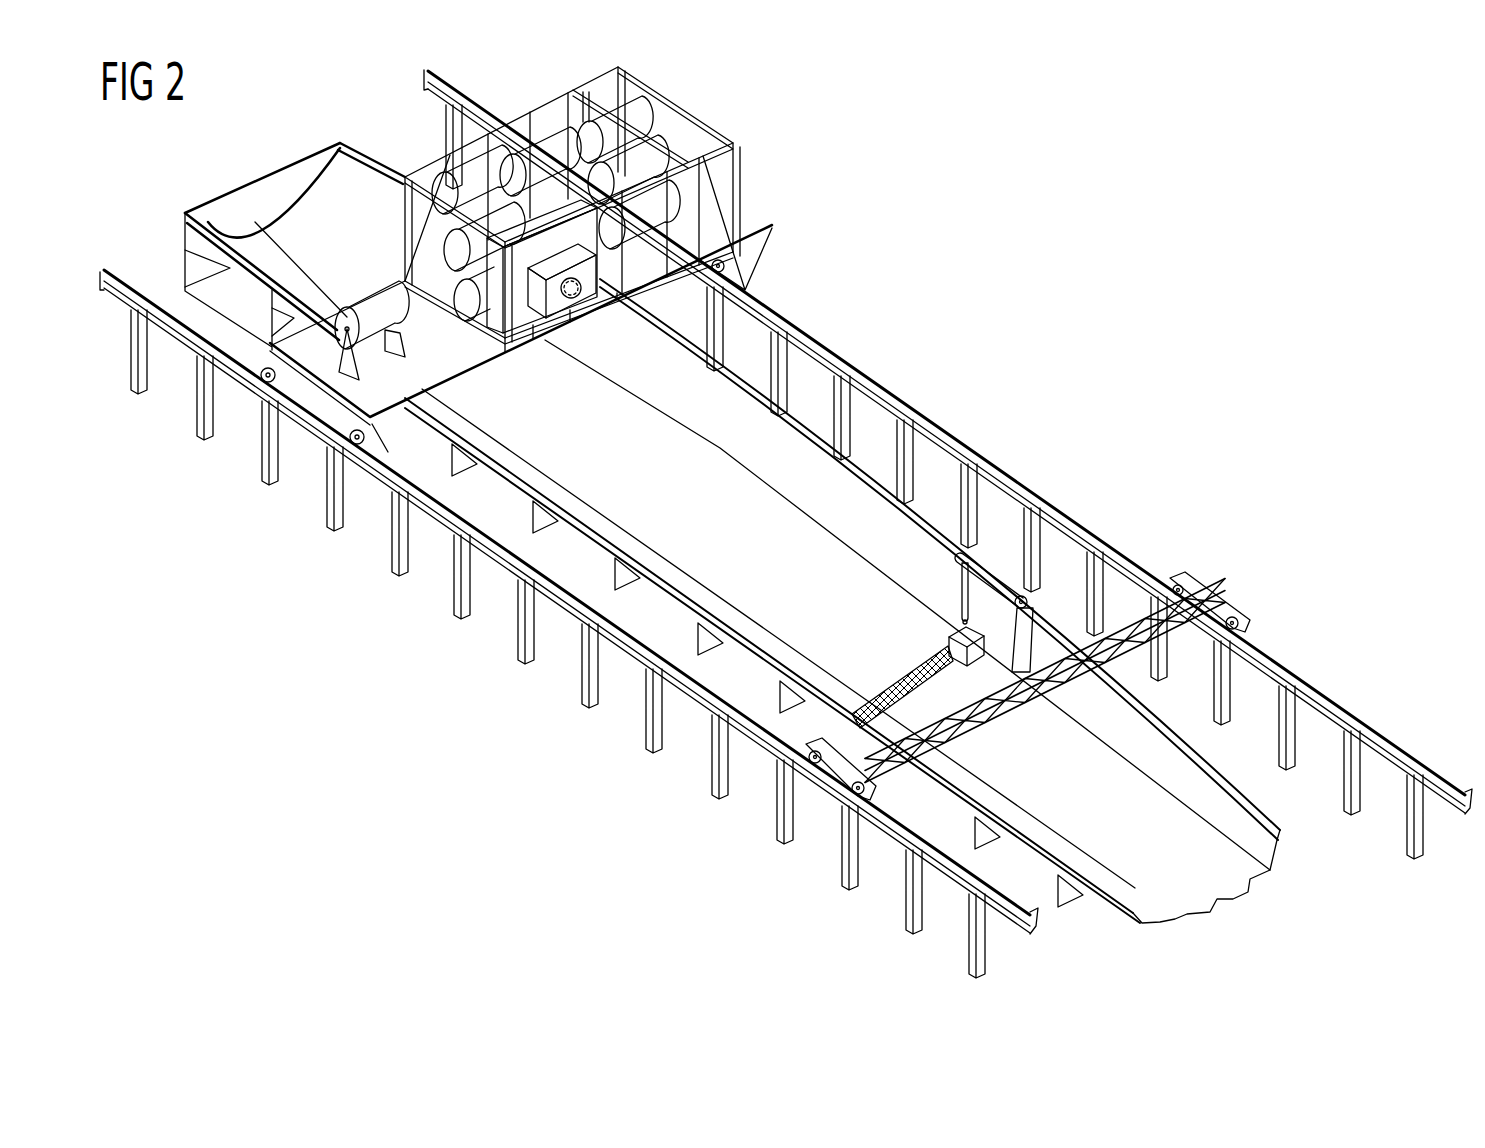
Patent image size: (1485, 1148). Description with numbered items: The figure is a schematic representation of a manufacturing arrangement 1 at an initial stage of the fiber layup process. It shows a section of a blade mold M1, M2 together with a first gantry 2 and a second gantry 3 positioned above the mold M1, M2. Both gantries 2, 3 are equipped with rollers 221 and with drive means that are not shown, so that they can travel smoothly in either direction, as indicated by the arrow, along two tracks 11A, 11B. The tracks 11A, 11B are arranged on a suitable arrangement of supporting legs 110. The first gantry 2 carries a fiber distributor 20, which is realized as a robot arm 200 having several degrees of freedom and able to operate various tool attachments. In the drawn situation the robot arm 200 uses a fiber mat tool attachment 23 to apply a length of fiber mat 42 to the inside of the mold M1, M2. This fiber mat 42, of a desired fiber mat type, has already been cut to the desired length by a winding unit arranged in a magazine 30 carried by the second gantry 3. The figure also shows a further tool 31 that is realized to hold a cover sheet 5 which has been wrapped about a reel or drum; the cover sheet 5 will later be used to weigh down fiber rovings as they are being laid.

The manufacturing arrangement 1 is at (1140, 298).
The first gantry 2 is at (1132, 617).
The second gantry 3 is at (462, 360).
The cover sheet 5 is at (400, 318).
The track 11A is at (572, 598).
The track 11B is at (828, 345).
The fiber distributor 20 is at (951, 607).
The fiber mat tool attachment 23 is at (588, 293).
The magazine 30 is at (427, 164).
The further tool 31 is at (360, 370).
The fiber mat 42 is at (893, 703).
The supporting legs 110 is at (648, 728).
The robot arm 200 is at (998, 582).
The rollers 221 is at (843, 792).
The blade mold M1 is at (295, 228).
The blade mold M2 is at (317, 200).